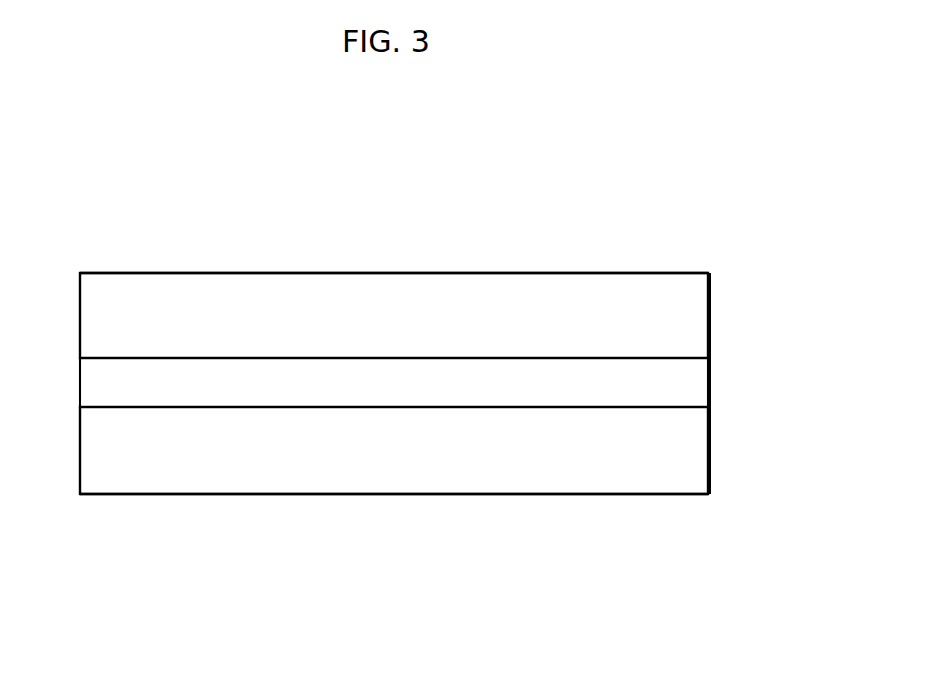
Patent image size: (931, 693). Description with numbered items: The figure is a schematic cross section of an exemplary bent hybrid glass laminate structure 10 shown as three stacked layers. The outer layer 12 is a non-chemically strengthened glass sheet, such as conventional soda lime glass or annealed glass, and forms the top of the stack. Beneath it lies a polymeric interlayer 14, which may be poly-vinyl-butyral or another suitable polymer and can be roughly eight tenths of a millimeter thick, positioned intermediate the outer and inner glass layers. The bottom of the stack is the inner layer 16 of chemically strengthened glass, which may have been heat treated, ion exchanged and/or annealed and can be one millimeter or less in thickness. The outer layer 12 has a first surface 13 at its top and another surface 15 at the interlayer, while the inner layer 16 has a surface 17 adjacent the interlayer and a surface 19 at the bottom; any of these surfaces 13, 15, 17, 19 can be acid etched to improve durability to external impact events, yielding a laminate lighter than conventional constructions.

The laminate structure 10 is at (411, 413).
The outer layer 12 is at (615, 300).
The first surface of the outer layer 13 is at (397, 272).
The polymeric interlayer 14 is at (677, 388).
The first surface of the outer layer 15 is at (210, 357).
The inner layer 16 is at (643, 458).
The surface of the inner layer 17 is at (100, 407).
The surface of the inner layer 19 is at (402, 494).